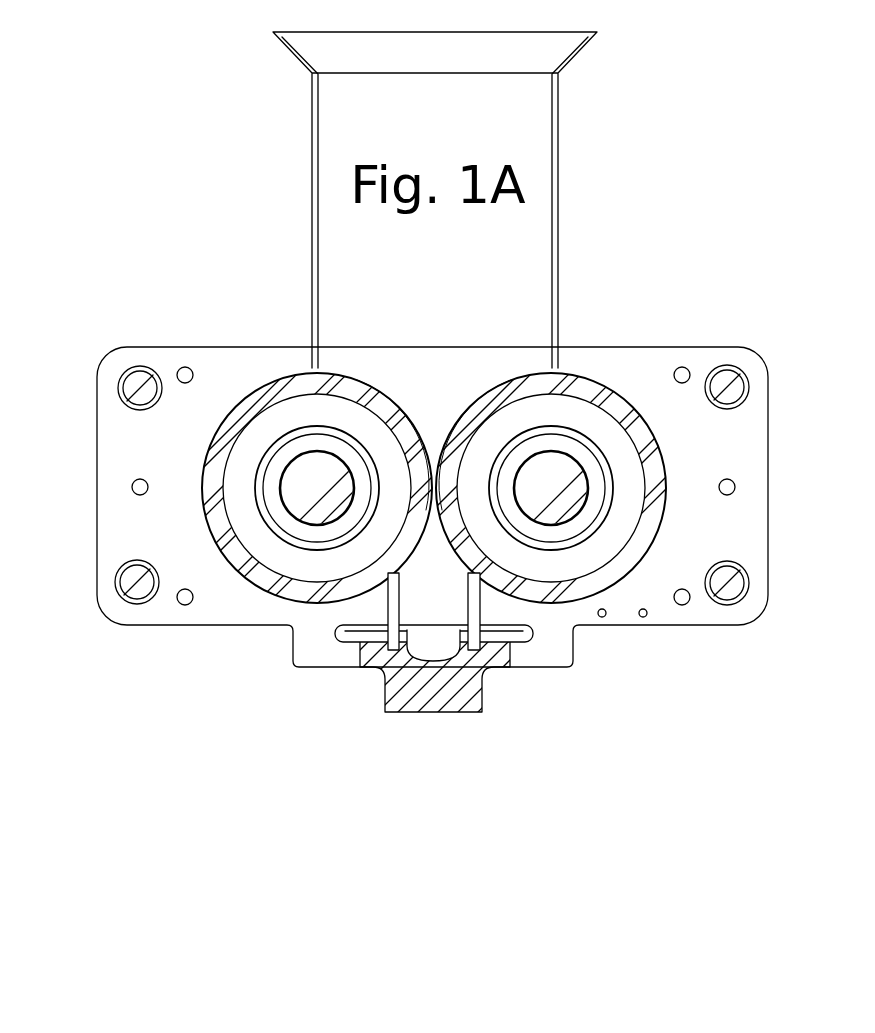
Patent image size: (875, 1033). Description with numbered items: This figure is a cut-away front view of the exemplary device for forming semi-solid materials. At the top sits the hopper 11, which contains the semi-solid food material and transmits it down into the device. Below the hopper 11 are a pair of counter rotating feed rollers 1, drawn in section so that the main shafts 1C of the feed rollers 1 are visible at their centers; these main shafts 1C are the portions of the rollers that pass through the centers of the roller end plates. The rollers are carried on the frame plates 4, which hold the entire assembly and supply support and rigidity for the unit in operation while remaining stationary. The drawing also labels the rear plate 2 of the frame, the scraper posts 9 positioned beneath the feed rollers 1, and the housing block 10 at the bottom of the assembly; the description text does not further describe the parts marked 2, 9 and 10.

The feed rollers 1 is at (560, 588).
The main shafts 1C is at (562, 487).
The mounting plate 2 is at (757, 540).
The frame plates 4 is at (140, 388).
The scraper posts 9 is at (472, 600).
The housing block 10 is at (465, 695).
The hopper 11 is at (497, 127).